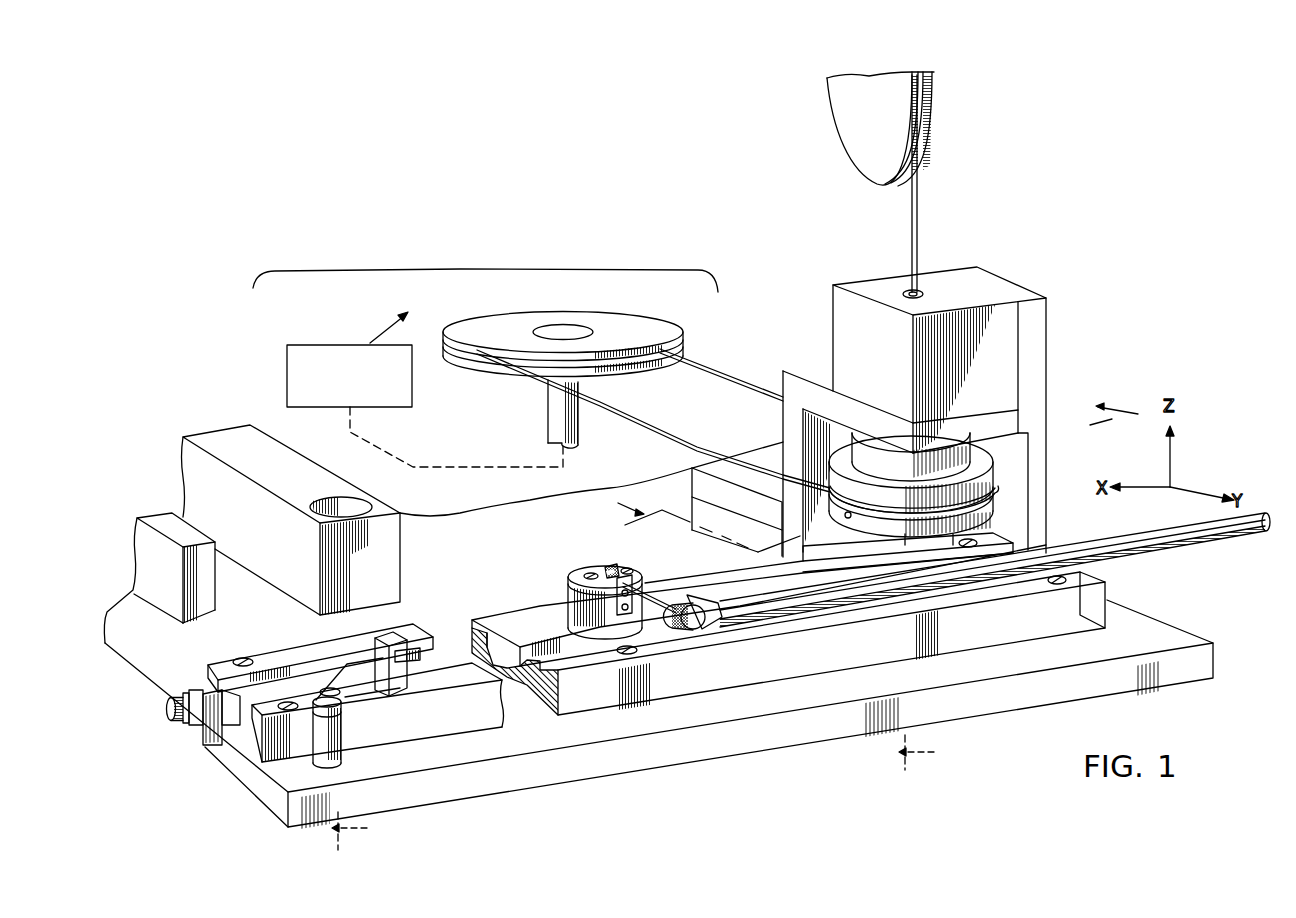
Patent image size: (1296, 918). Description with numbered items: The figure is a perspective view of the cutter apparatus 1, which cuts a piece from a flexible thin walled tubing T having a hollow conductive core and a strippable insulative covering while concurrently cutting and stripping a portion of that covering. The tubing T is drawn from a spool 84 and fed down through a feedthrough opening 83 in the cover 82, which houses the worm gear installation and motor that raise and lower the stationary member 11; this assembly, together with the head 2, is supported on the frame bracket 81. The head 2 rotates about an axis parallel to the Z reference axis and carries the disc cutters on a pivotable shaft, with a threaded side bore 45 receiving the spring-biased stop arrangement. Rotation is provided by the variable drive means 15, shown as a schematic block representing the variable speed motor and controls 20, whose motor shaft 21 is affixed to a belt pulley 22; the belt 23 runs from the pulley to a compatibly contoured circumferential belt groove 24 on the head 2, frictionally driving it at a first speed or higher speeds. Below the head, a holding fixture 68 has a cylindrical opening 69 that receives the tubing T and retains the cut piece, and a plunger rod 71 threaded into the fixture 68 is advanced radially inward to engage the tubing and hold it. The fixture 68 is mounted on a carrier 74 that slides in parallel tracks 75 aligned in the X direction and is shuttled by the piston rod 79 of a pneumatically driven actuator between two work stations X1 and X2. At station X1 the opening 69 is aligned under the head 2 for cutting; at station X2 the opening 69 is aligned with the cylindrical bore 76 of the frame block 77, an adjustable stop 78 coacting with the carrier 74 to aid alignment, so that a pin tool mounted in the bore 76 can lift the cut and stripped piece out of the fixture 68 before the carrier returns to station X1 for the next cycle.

The cutter apparatus 1 is at (346, 204).
The head 2 is at (1002, 478).
The stationary member 11 is at (967, 452).
The variable drive means 15 is at (483, 271).
The variable speed motor with controls 20 is at (330, 345).
The motor shaft 21 is at (490, 461).
The belt pulley 22 is at (670, 331).
The belt 23 is at (722, 380).
The circumferential belt groove 24 is at (790, 481).
The side bore 45 is at (846, 518).
The holding fixture 68 is at (568, 587).
The cylindrical opening 69 is at (611, 568).
The plunger rod 71 is at (653, 596).
The carrier 74 is at (535, 626).
The parallel tracks 75 is at (498, 619).
The cylindrical bore 76 is at (360, 506).
The frame block 77 is at (390, 549).
The adjustable stop 78 is at (238, 712).
The piston rod 79 is at (1144, 538).
The frame bracket 81 is at (998, 424).
The cover 82 is at (1000, 358).
The feedthrough opening 83 is at (918, 292).
The spool 84 is at (857, 142).
The tubing T is at (917, 217).
The first work station X1 is at (932, 752).
The second work station X2 is at (365, 831).